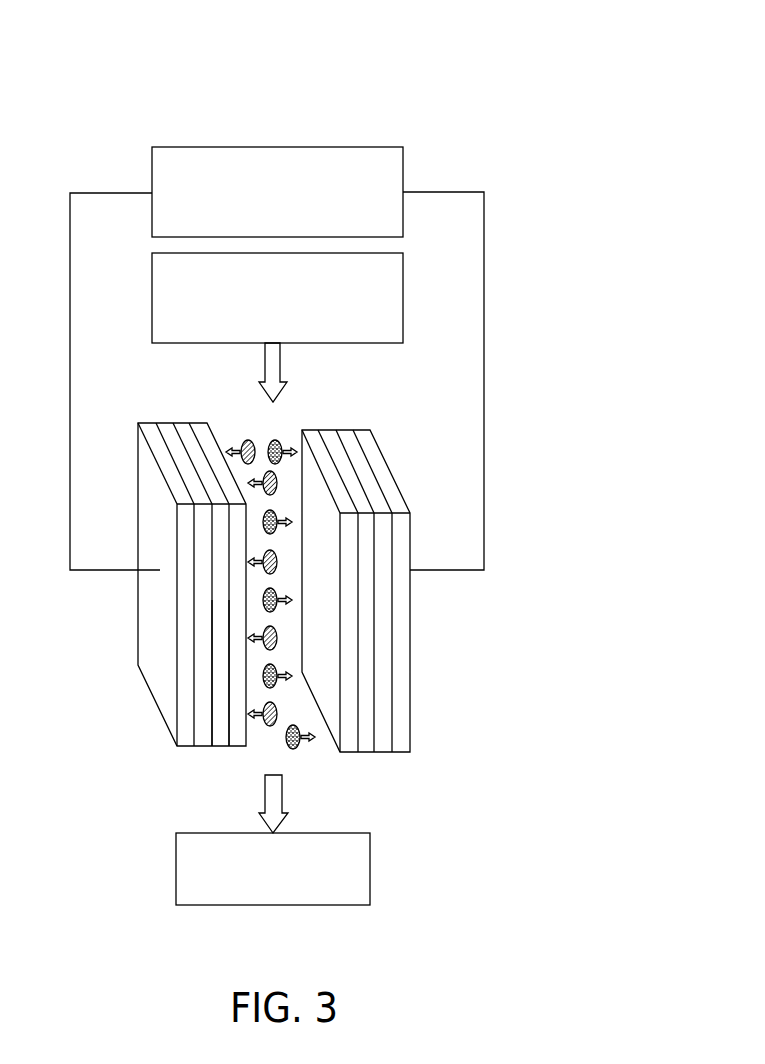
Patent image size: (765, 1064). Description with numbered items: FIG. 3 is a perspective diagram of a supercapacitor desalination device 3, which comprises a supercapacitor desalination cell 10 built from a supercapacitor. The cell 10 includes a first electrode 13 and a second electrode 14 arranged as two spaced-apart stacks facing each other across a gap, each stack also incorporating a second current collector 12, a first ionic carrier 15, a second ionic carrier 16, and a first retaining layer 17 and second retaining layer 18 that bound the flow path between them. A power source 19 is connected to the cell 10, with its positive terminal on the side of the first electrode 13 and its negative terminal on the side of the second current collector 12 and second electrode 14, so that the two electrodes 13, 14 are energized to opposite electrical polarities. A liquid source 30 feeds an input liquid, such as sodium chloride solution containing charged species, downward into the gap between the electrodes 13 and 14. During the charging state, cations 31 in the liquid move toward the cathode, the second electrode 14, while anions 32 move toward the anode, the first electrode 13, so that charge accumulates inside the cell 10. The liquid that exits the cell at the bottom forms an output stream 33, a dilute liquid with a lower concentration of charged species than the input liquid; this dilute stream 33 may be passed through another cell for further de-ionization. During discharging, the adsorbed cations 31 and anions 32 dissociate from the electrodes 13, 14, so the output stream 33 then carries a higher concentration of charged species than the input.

The supercapacitor desalination device 3 is at (556, 58).
The supercapacitor desalination cell 10 is at (150, 637).
The second current collector 12 is at (400, 660).
The first electrode 13 is at (168, 427).
The second electrode 14 is at (348, 437).
The first ionic carrier 15 is at (220, 740).
The second ionic carrier 16 is at (366, 746).
The first retaining layer 17 is at (200, 427).
The second retaining layer 18 is at (312, 437).
The power source 19 is at (276, 147).
The liquid source 30 is at (403, 301).
The cations 31 is at (279, 440).
The anions 32 is at (248, 440).
The output stream 33 is at (370, 862).